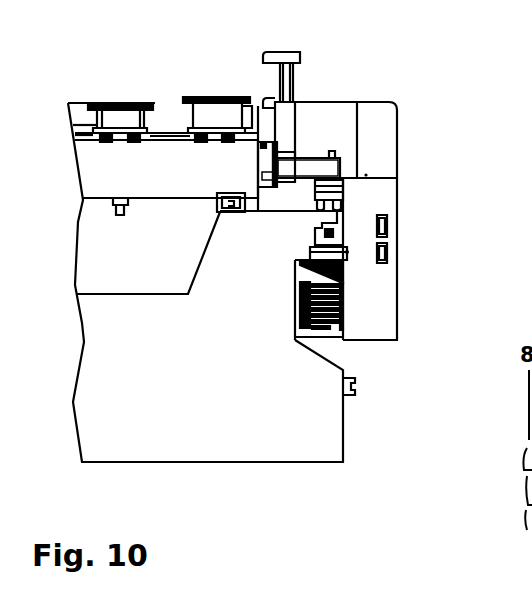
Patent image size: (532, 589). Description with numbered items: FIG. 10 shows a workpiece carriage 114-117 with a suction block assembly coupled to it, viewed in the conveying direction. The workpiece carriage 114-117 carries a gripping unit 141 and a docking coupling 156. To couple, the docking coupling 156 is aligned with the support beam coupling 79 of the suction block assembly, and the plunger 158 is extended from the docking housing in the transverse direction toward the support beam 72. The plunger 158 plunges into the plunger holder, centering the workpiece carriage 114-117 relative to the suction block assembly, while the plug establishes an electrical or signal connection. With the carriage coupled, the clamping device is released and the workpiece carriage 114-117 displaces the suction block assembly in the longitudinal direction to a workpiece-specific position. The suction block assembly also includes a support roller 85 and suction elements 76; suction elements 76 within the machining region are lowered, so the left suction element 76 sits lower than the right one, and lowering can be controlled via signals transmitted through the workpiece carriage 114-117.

The support roller 85 is at (77, 107).
The support beam 72 is at (165, 170).
The suction elements 76 is at (215, 115).
The gripping unit 141 is at (285, 78).
The workpiece carriage 114-117 is at (352, 92).
The docking coupling 156 is at (329, 163).
The plunger 158 is at (273, 170).
The support beam coupling 79 is at (268, 177).